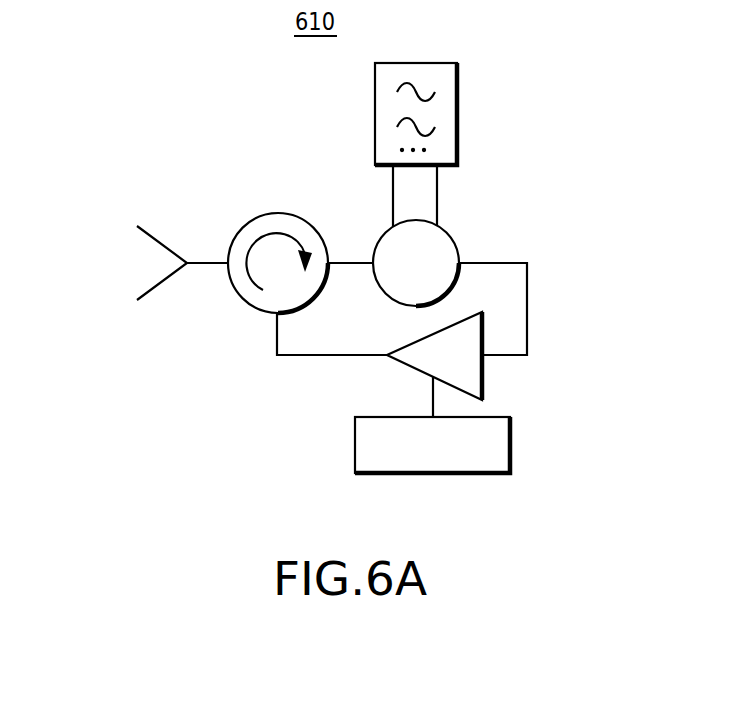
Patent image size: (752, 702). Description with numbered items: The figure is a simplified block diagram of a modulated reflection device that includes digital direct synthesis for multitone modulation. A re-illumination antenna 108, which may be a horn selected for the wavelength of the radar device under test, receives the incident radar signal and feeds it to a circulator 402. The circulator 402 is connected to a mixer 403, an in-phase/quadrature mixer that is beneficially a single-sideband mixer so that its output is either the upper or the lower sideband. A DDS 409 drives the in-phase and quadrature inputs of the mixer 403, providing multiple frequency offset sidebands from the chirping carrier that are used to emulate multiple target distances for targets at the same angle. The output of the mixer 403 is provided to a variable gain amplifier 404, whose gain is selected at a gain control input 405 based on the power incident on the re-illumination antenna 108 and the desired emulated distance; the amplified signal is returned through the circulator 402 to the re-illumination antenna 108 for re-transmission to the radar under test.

The re-illumination antenna 108 is at (150, 260).
The circulator 402 is at (264, 216).
The mixer 403 is at (452, 241).
The variable gain amplifier 404 is at (482, 370).
The gain control input 405 is at (510, 443).
The DDS 409 is at (376, 80).